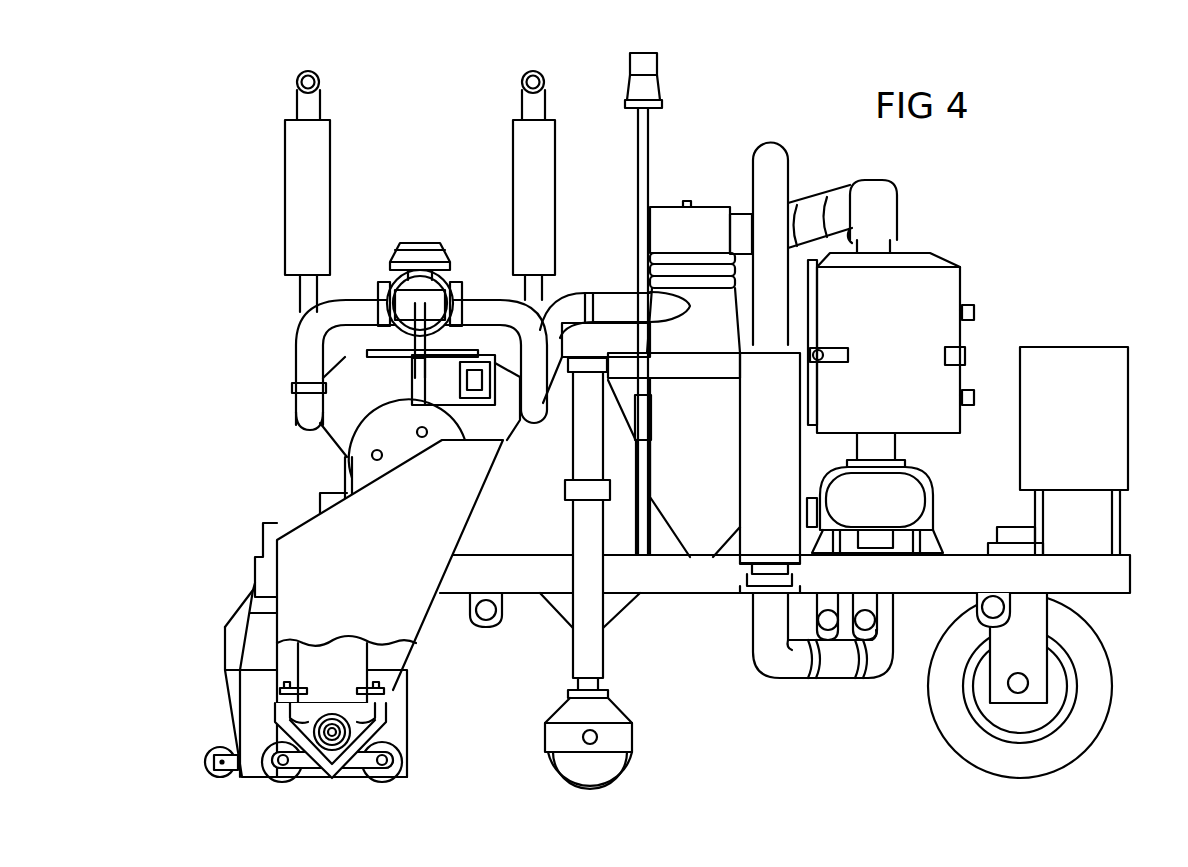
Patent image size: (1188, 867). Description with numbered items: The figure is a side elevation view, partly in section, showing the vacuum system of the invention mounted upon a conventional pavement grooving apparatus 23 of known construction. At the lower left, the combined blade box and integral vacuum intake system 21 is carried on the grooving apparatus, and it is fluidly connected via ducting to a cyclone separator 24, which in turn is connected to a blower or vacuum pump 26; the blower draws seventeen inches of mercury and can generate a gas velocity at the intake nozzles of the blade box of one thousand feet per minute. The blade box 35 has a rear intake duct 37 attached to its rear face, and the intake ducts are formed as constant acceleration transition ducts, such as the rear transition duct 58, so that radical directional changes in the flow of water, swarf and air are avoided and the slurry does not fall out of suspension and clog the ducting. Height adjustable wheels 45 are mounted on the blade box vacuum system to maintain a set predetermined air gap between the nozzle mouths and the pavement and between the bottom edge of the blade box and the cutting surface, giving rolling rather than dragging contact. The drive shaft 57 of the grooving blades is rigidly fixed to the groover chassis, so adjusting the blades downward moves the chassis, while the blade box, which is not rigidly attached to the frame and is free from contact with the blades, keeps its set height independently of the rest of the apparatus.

The blade box and integral vacuum intake system 21 is at (210, 575).
The pavement grooving apparatus 23 is at (440, 110).
The cyclone separator 24 is at (706, 437).
The blower or vacuum pump 26 is at (938, 459).
The blade box 35 is at (397, 716).
The rear intake duct 37 is at (243, 703).
The height adjustable wheels 45 is at (218, 766).
The drive shaft 57 is at (334, 730).
The rear transition duct 58 is at (236, 636).